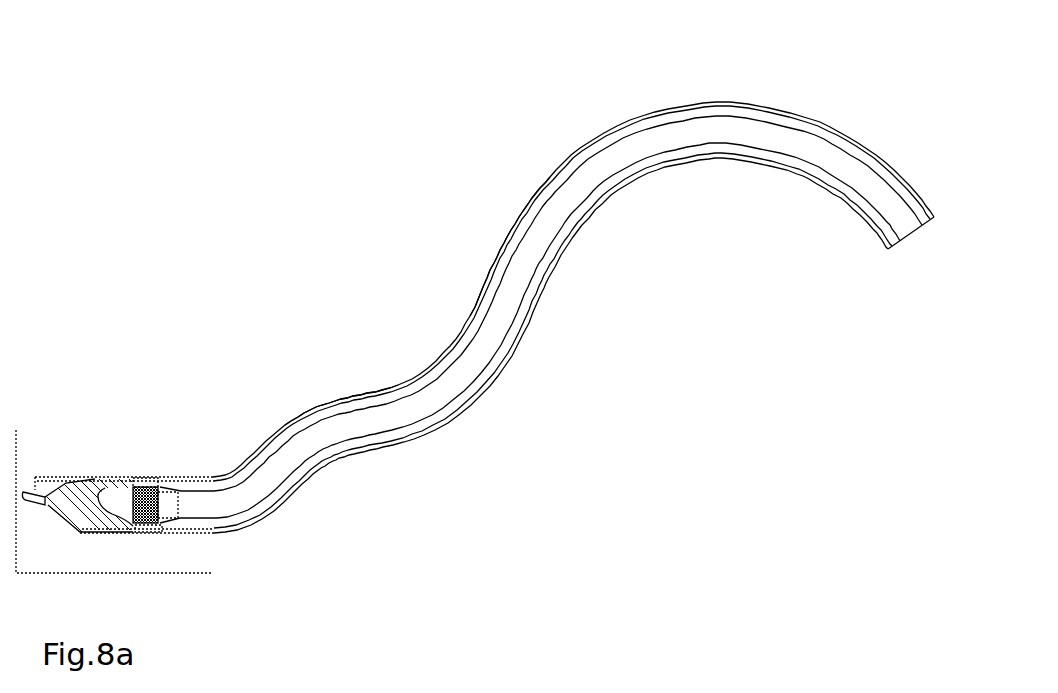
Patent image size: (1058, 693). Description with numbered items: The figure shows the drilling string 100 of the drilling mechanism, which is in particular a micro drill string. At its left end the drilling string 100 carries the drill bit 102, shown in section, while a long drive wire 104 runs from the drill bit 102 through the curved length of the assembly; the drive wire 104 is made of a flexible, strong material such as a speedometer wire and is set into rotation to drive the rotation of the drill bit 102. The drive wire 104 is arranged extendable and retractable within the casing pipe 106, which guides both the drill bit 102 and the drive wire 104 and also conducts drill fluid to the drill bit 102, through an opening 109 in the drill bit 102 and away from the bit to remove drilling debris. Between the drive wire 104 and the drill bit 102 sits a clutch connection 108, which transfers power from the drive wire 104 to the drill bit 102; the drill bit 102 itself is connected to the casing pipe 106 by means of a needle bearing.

The drilling string 100 is at (826, 58).
The drill bit 102 is at (67, 500).
The drive wire 104 is at (327, 432).
The casing pipe 106 is at (493, 258).
The clutch connection 108 is at (147, 487).
The opening 109 is at (110, 497).